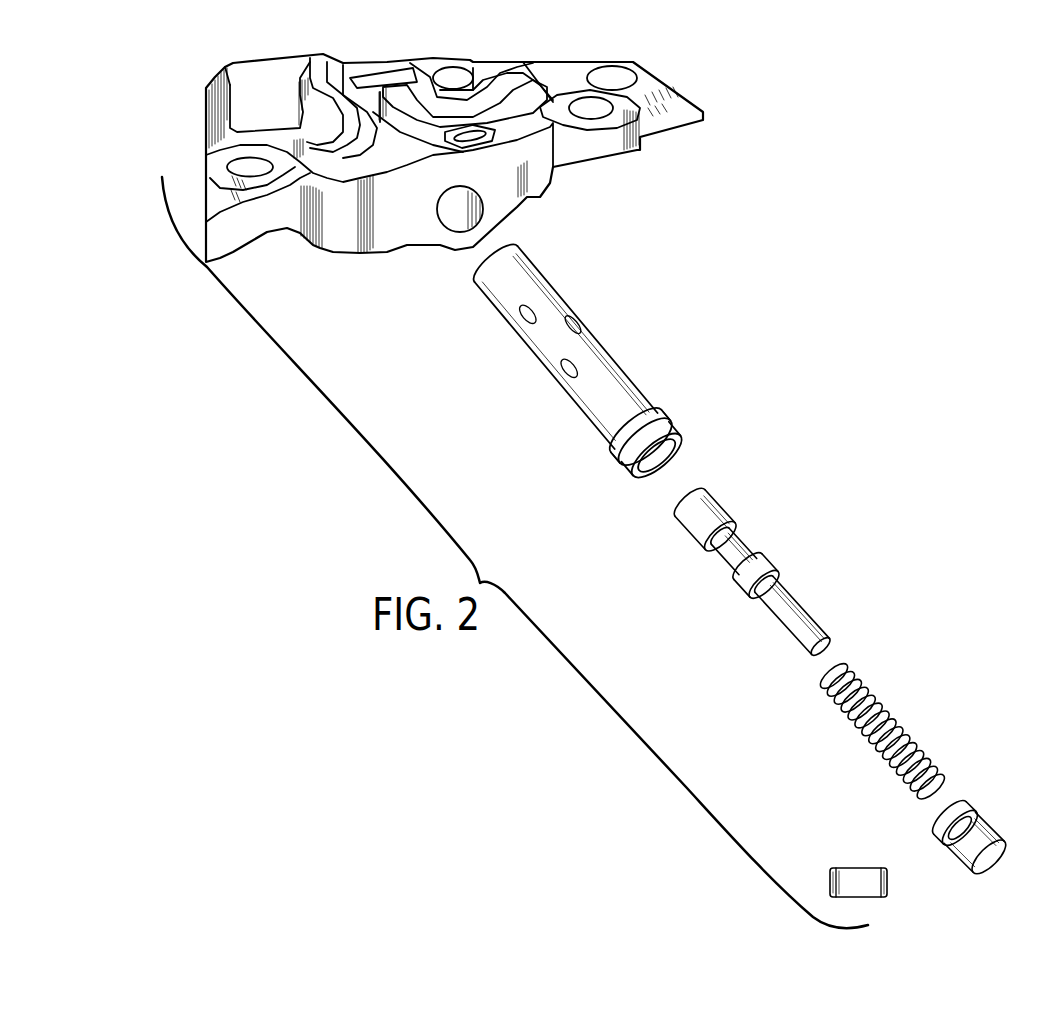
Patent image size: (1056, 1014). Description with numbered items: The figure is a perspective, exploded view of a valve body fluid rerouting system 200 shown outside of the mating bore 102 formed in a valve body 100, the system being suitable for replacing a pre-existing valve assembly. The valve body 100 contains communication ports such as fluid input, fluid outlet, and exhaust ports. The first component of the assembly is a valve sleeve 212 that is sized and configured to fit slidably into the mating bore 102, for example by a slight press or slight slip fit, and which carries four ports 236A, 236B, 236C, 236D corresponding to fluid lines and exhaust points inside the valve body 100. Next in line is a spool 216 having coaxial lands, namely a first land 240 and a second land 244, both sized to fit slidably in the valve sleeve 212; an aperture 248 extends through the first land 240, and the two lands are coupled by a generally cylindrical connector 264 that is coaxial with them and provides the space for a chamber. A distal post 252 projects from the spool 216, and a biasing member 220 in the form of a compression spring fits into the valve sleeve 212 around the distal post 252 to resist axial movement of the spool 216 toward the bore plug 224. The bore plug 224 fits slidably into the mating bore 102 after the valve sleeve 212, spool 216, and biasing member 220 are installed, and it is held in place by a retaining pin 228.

The valve body 100 is at (488, 158).
The mating bore 102 is at (467, 210).
The valve body fluid rerouting system 200 is at (874, 292).
The valve sleeve 212 is at (590, 360).
The port 236A is at (520, 318).
The port 236B is at (573, 323).
The port 236C is at (560, 373).
The port 236D is at (655, 426).
The spool 216 is at (784, 559).
The first land 240 is at (710, 500).
The aperture 248 is at (713, 550).
The connector 264 is at (722, 563).
The second land 244 is at (765, 568).
The distal post 252 is at (811, 612).
The biasing member 220 is at (887, 707).
The bore plug 224 is at (977, 807).
The retaining pin 228 is at (842, 872).